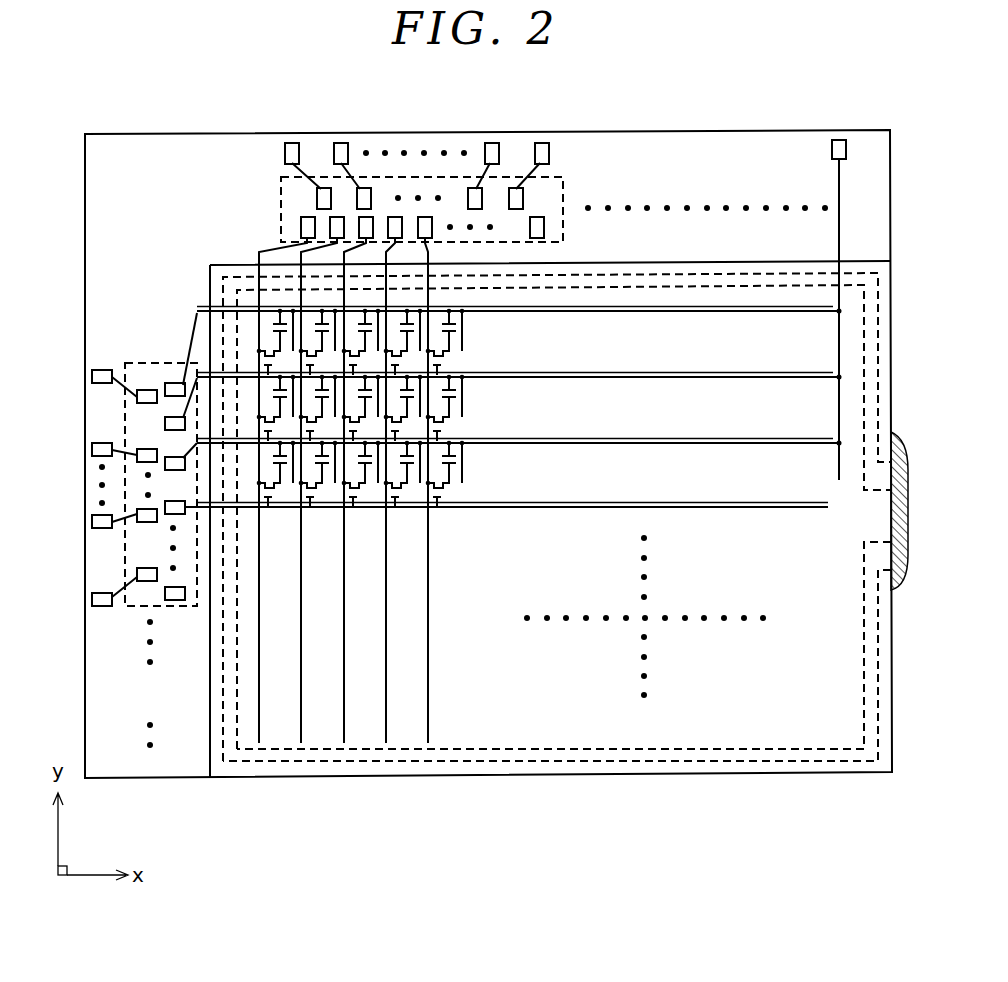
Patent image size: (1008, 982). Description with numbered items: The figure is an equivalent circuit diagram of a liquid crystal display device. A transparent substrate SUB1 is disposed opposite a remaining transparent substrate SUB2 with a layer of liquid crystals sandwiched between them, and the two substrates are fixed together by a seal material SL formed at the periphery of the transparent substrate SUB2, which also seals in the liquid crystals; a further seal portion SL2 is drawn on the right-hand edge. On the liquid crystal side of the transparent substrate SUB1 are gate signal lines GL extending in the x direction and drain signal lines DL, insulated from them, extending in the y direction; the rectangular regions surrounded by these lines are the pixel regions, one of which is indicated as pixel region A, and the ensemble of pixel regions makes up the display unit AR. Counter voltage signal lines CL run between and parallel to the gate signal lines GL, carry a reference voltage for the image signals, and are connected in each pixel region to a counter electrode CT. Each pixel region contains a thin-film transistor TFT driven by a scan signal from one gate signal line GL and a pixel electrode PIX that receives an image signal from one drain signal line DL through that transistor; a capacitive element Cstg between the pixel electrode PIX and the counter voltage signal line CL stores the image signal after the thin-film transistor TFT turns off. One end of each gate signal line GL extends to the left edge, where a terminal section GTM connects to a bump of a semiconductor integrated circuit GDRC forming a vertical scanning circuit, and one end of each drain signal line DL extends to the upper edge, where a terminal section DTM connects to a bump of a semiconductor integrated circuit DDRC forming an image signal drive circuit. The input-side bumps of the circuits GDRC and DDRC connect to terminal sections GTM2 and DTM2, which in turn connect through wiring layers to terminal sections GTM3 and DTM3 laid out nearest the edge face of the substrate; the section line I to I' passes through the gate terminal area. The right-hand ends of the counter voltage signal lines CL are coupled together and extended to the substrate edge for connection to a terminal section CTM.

The transparent substrate SUB1 is at (130, 778).
The transparent substrate SUB2 is at (215, 778).
The seal material SL is at (408, 757).
The sealing material (injection port seal) SL2 is at (890, 518).
The terminal section CTM is at (836, 140).
The semiconductor integrated circuit DDRC is at (565, 190).
The terminal section DTM3 is at (285, 152).
The terminal section DTM2 is at (317, 199).
The terminal section DTM is at (301, 228).
The drain signal line DL is at (333, 790).
The counter voltage signal line CL is at (785, 313).
The gate signal line GL is at (803, 500).
The semiconductor integrated circuit GDRC is at (137, 613).
The terminal section GTM is at (172, 383).
The terminal section GTM2 is at (142, 390).
The terminal section GTM3 is at (120, 370).
The section line I is at (113, 429).
The section line I' is at (193, 341).
The capacitive element Cstg is at (413, 327).
The counter electrode CT is at (422, 342).
The thin-film transistor TFT is at (400, 362).
The pixel electrode PIX is at (400, 410).
The pixel region A is at (435, 476).
The display unit AR is at (622, 680).